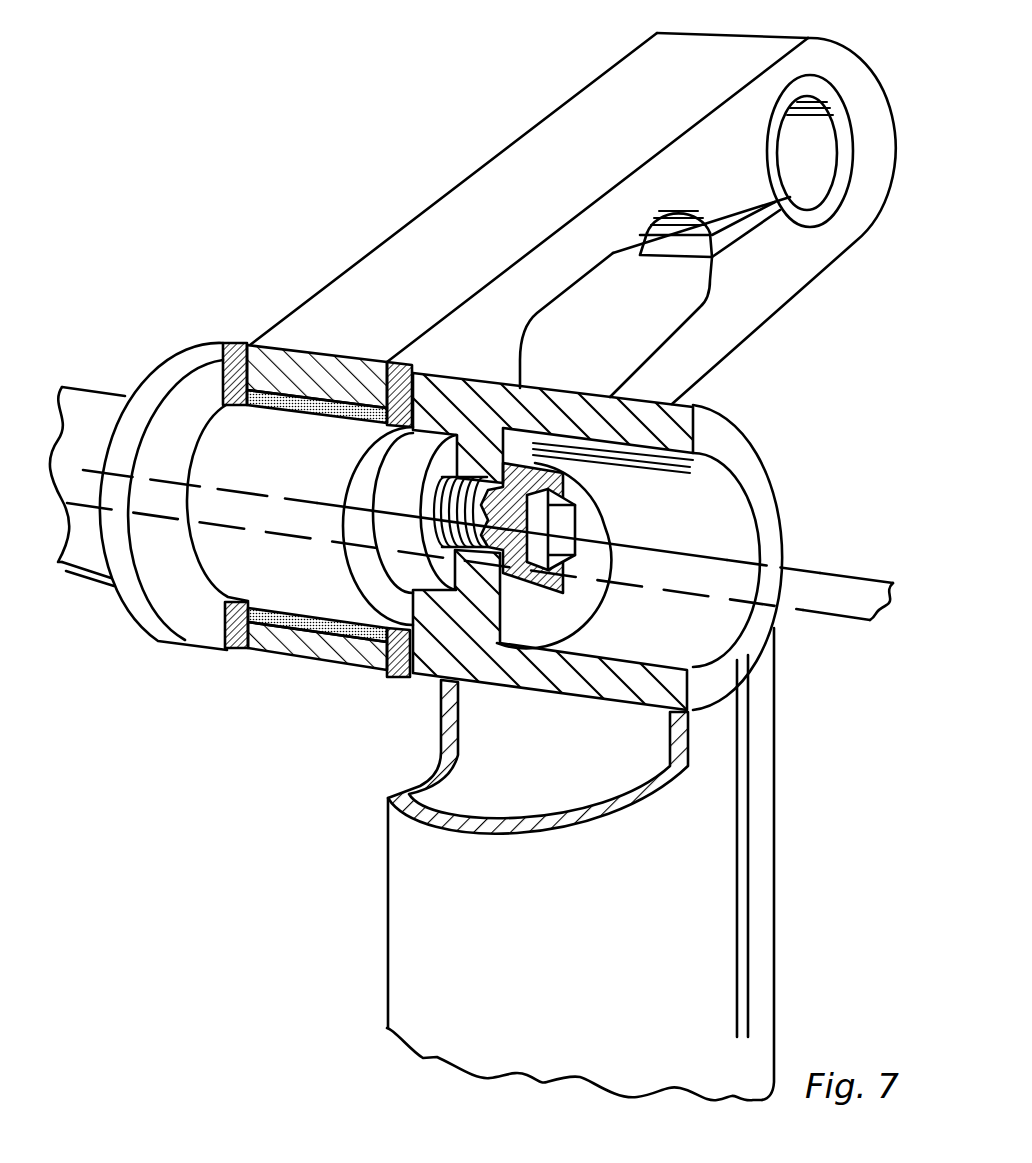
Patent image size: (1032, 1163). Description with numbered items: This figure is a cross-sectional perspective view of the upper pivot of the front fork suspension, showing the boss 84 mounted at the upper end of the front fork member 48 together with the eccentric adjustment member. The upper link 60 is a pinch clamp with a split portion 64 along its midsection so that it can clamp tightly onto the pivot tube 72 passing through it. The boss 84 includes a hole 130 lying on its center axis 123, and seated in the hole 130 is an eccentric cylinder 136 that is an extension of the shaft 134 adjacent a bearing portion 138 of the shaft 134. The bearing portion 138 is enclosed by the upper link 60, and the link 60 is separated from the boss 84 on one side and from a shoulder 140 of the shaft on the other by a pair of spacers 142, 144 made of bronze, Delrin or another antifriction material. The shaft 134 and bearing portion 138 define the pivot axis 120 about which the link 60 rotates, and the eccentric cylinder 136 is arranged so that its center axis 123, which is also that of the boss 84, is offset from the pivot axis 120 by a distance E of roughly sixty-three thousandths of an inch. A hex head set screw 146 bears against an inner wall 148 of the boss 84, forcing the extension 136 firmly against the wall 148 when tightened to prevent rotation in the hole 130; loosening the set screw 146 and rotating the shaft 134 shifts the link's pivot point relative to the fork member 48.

The front fork member 48 is at (755, 890).
The upper link 60 is at (545, 152).
The split portion 64 is at (755, 217).
The pivot tube 72 is at (827, 97).
The boss 84 is at (772, 513).
The pivot axis 120 is at (848, 618).
The center axis 123 is at (847, 577).
The hole 130 is at (432, 600).
The shaft 134 is at (93, 412).
The eccentric cylinder 136 is at (403, 568).
The bearing portion 138 is at (263, 570).
The shoulder 140 is at (210, 380).
The spacer 142 is at (393, 357).
The spacer 144 is at (250, 343).
The set screw 146 is at (697, 419).
The inner wall 148 is at (585, 503).
The distance E is at (892, 611).